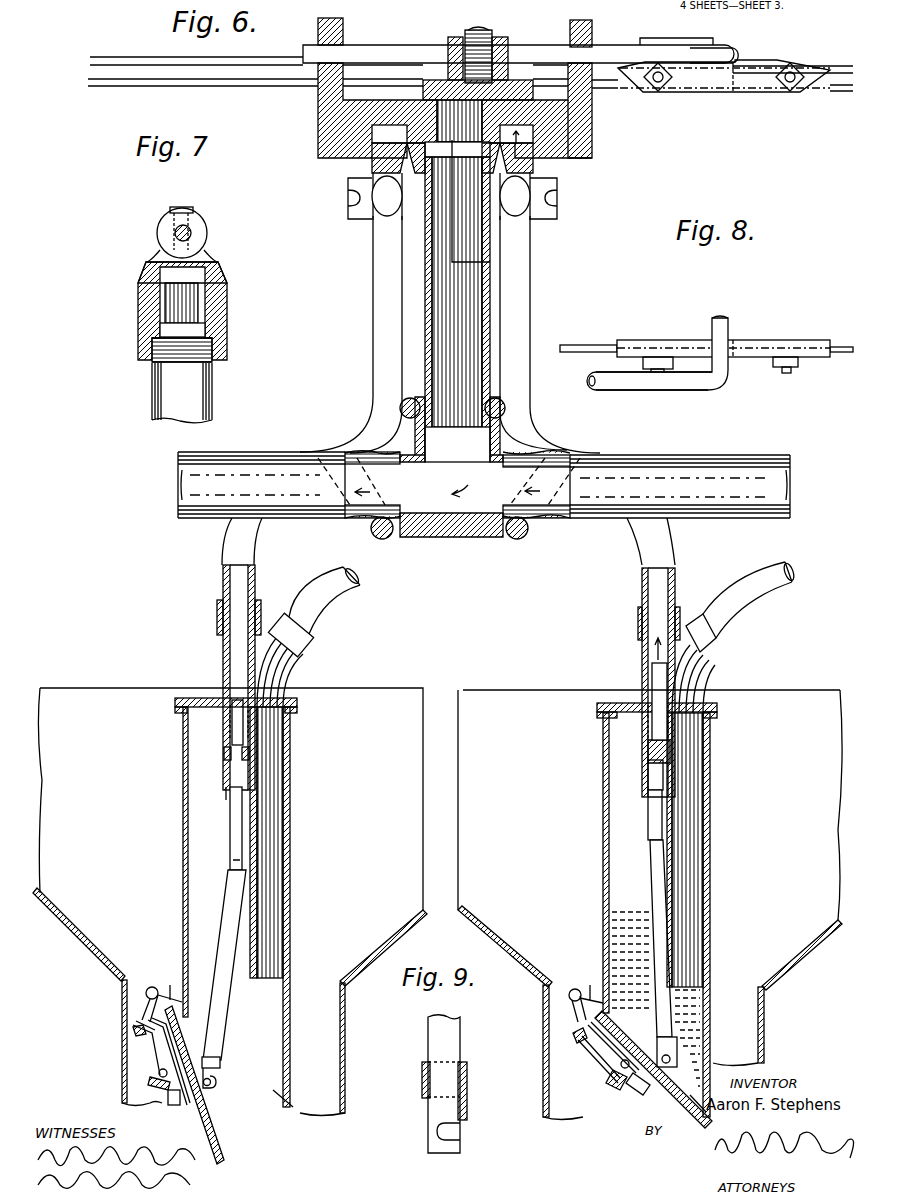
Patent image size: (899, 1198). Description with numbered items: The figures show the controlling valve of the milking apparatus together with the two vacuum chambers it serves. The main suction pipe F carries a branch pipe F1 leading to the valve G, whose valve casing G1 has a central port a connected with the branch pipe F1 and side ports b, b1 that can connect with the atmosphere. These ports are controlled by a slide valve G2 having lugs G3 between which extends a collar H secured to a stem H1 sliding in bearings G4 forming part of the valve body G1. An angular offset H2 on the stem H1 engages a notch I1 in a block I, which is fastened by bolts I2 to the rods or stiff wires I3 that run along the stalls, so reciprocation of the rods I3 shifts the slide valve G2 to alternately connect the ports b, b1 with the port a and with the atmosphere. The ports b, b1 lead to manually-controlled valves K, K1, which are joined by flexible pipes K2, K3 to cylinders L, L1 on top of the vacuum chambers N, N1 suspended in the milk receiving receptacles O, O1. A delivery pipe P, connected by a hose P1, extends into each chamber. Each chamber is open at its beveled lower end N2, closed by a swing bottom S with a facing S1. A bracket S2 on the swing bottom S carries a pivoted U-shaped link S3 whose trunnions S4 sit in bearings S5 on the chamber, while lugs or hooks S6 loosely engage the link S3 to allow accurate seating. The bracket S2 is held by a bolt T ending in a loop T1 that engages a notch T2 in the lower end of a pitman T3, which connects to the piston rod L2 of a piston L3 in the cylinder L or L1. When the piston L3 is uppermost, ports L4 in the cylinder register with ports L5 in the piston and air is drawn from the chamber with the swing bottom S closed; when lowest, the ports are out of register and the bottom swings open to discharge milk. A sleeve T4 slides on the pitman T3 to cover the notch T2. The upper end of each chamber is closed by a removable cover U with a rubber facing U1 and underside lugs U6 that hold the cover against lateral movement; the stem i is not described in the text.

In FIG. 6, the valve G is at (318, 30).
In FIG. 7, the valve G is at (167, 311).
In FIG. 6, the valve casing G1 is at (578, 145).
In FIG. 7, the valve casing G1 is at (225, 312).
In FIG. 6, the slide valve G2 is at (497, 115).
In FIG. 7, the slide valve G2 is at (220, 272).
In FIG. 6, the lugs G3 is at (528, 28).
In FIG. 7, the lugs G3 is at (172, 218).
In FIG. 6, the bearings G4 is at (582, 27).
In FIG. 6, the collar H is at (503, 26).
In FIG. 7, the collar H is at (166, 241).
In FIG. 6, the valve stem H1 is at (612, 55).
In FIG. 7, the valve stem H1 is at (192, 230).
In FIG. 8, the valve stem H1 is at (663, 386).
In FIG. 6, the angular offset H2 is at (725, 55).
In FIG. 8, the angular offset H2 is at (730, 320).
In FIG. 6, the block I is at (795, 48).
In FIG. 8, the block I is at (763, 357).
In FIG. 6, the notch I1 is at (733, 75).
In FIG. 8, the notch I1 is at (732, 345).
In FIG. 6, the bolts I2 is at (790, 93).
In FIG. 8, the bolts I2 is at (660, 342).
In FIG. 6, the rods I3 is at (851, 75).
In FIG. 8, the rods I3 is at (588, 343).
In FIG. 6, the central port a is at (458, 157).
In FIG. 7, the central port a is at (180, 293).
In FIG. 6, the side port b is at (410, 110).
In FIG. 6, the side port b1 is at (505, 117).
In FIG. 6, the stem i is at (472, 211).
In FIG. 6, the main suction pipe F is at (250, 467).
In FIG. 6, the branch pipe F1 is at (458, 318).
In FIG. 7, the branch pipe F1 is at (198, 395).
In FIG. 6, the manually-controlled valve K is at (390, 230).
In FIG. 6, the manually-controlled valve K1 is at (515, 236).
In FIG. 6, the flexible pipe K2 is at (372, 405).
In FIG. 6, the flexible pipe K3 is at (565, 442).
In FIG. 6, the cylinder L is at (235, 658).
In FIG. 6, the cylinder L1 is at (648, 648).
In FIG. 6, the piston rod L2 is at (650, 803).
In FIG. 6, the piston L3 is at (650, 765).
In FIG. 6, the ports L4 is at (645, 722).
In FIG. 6, the ports L5 is at (652, 738).
In FIG. 6, the delivery pipe P is at (267, 778).
In FIG. 6, the hose P1 is at (322, 598).
In FIG. 6, the cover U is at (267, 700).
In FIG. 6, the rubber facing U1 is at (297, 711).
In FIG. 6, the lugs U6 is at (613, 705).
In FIG. 6, the vacuum chamber N is at (200, 868).
In FIG. 6, the vacuum chamber N1 is at (617, 862).
In FIG. 6, the lower end N2 is at (735, 1057).
In FIG. 6, the milk receiving receptacle O is at (110, 963).
In FIG. 6, the milk receiving receptacle O1 is at (777, 957).
In FIG. 6, the swing bottom S is at (198, 1127).
In FIG. 6, the facing S1 is at (217, 1150).
In FIG. 6, the bracket S2 is at (620, 1086).
In FIG. 6, the U-shaped link S3 is at (610, 1048).
In FIG. 6, the trunnions S4 is at (577, 988).
In FIG. 6, the bearings S5 is at (590, 982).
In FIG. 6, the lugs or hooks S6 is at (576, 1038).
In FIG. 6, the bolt T is at (170, 1098).
In FIG. 6, the loop T1 is at (210, 1090).
In FIG. 6, the notch T2 is at (213, 1076).
In FIG. 9, the notch T2 is at (450, 1133).
In FIG. 6, the pitman T3 is at (227, 1006).
In FIG. 9, the pitman T3 is at (443, 1041).
In FIG. 6, the sleeve T4 is at (220, 1062).
In FIG. 9, the sleeve T4 is at (467, 1087).